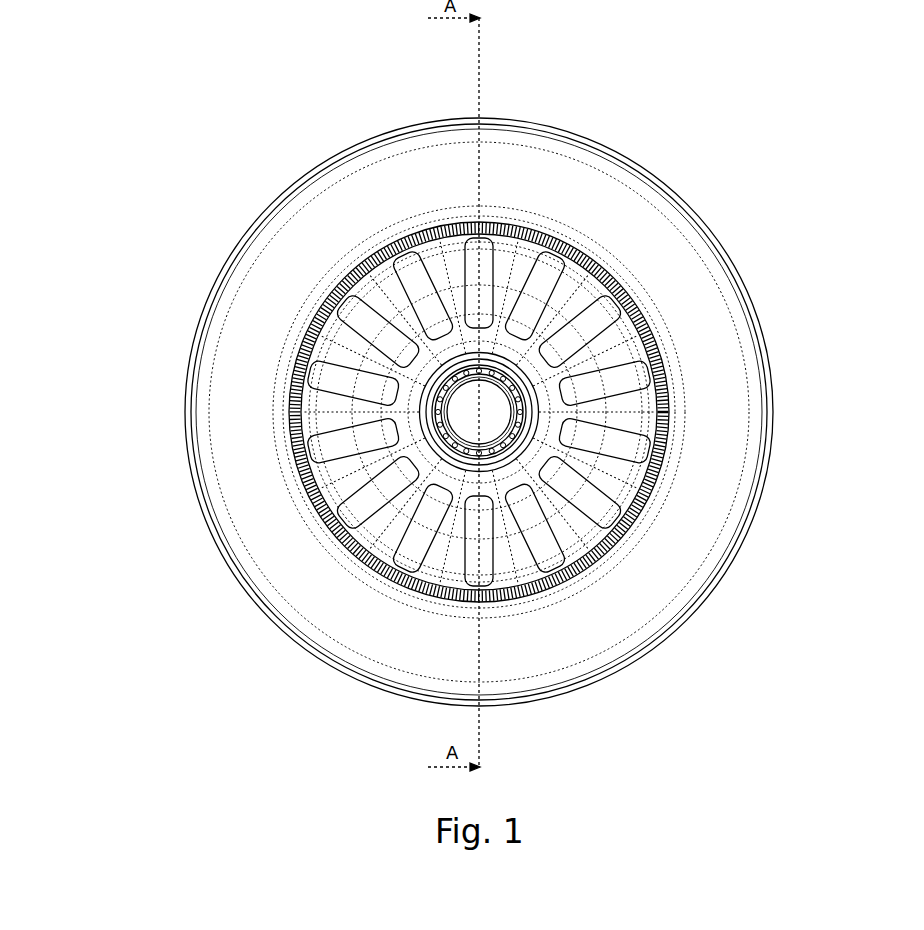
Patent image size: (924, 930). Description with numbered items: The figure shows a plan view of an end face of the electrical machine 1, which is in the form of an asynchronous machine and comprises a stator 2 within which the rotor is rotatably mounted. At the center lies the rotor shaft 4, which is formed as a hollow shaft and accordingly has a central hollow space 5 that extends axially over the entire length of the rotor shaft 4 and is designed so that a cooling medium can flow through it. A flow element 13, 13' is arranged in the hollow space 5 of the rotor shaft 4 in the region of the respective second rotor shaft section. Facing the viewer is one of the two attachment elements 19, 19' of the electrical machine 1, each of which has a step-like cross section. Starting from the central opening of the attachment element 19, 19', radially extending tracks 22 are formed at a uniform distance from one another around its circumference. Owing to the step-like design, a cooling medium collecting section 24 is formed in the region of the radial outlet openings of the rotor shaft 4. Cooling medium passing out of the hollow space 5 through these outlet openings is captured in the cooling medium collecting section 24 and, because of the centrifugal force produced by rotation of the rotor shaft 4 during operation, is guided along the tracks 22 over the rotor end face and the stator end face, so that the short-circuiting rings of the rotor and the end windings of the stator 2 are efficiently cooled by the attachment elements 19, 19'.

The electrical machine 1 is at (162, 147).
The stator 2 is at (368, 212).
The rotor shaft 4 is at (417, 411).
The hollow space 5 is at (462, 420).
The flow element 13 is at (288, 380).
The flow element 13' is at (479, 412).
The attachment element 19 is at (604, 328).
The attachment element 19' is at (479, 411).
The tracks 22 is at (483, 260).
The cooling medium collecting section 24 is at (556, 448).